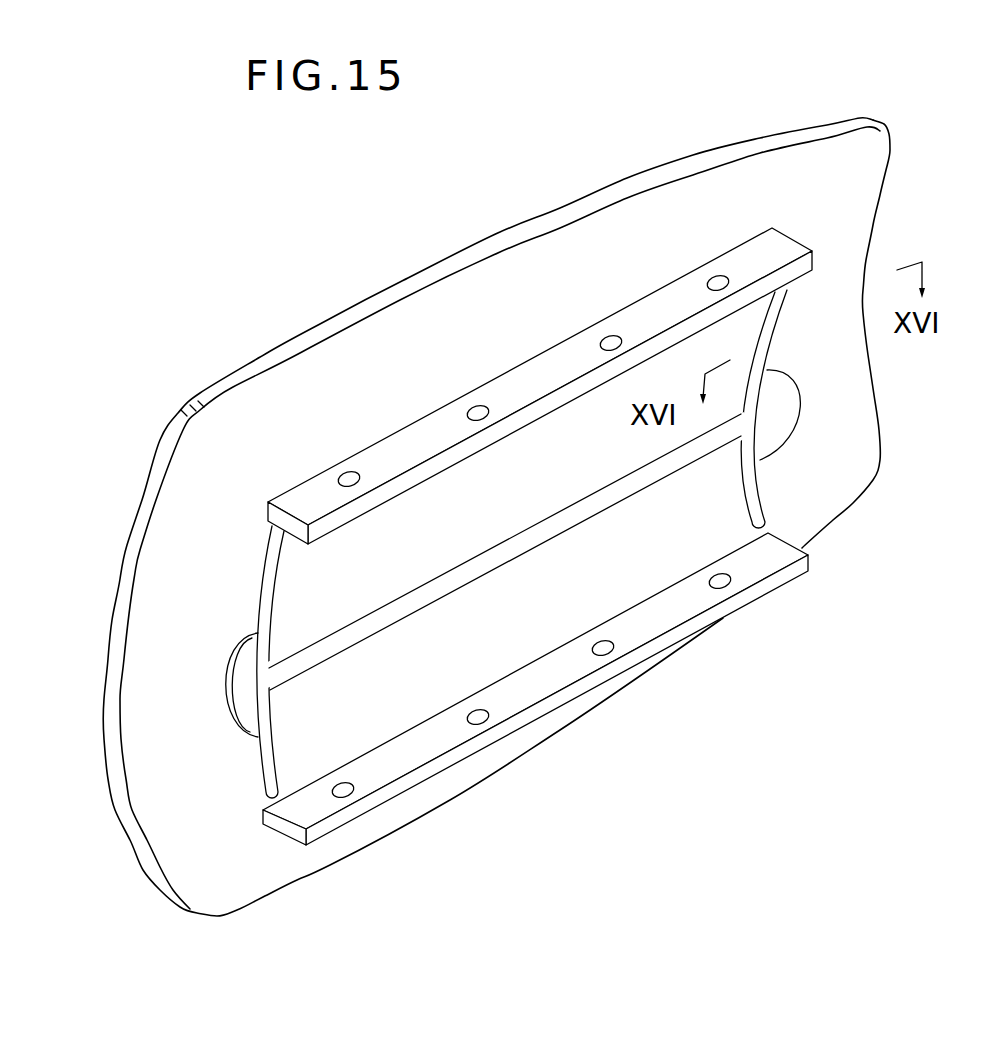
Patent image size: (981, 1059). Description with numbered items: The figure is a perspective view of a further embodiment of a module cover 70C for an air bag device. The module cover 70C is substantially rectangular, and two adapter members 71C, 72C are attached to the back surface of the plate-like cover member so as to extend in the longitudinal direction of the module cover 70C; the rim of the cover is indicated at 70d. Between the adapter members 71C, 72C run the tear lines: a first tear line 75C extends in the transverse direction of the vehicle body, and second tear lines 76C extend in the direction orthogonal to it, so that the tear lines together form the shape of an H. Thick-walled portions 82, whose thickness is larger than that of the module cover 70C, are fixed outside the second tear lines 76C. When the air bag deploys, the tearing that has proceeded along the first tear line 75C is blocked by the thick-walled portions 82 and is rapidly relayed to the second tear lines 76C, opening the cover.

The module cover 70C is at (688, 146).
The rim edge of cover 70d is at (395, 330).
The adapter member 71C is at (562, 360).
The adapter member 72C is at (566, 673).
The first tear line 75C is at (530, 539).
The second tear line 76C is at (746, 498).
The thick-walled portion 82 is at (783, 415).